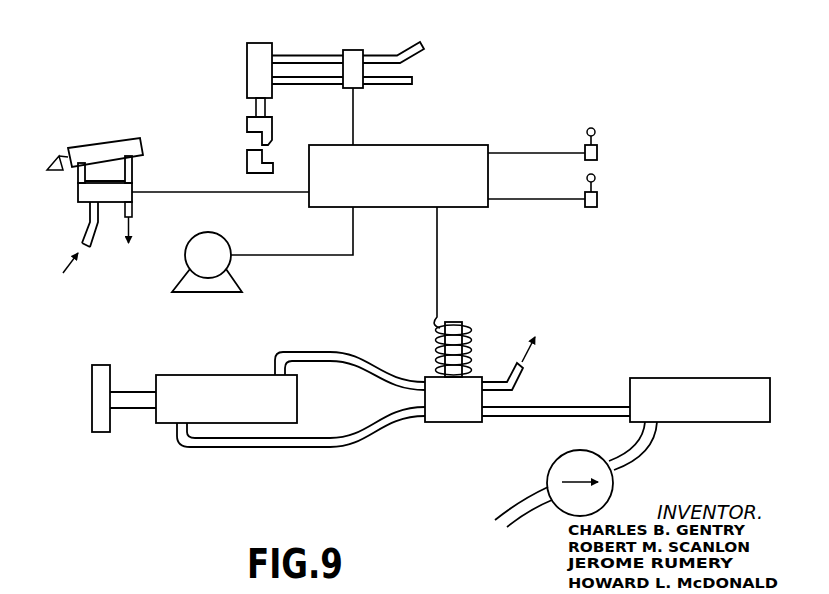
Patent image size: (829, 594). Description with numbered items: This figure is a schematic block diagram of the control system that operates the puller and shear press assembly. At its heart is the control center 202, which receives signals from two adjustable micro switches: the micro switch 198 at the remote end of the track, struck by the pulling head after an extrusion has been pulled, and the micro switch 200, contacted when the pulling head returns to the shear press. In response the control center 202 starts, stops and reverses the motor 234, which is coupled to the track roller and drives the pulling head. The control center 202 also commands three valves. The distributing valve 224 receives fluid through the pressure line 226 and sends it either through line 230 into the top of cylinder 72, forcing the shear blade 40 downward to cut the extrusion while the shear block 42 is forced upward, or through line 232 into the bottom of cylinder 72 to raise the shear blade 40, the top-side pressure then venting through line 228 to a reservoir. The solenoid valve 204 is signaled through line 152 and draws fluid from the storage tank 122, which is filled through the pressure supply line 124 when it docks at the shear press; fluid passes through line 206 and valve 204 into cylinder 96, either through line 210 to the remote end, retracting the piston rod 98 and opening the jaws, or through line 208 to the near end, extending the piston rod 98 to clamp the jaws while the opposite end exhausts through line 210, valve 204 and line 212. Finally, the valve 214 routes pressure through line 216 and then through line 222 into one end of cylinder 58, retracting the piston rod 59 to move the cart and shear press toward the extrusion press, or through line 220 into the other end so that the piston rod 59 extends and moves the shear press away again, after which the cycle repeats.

The shear blade 40 is at (253, 126).
The shear block 42 is at (252, 163).
The cylinder 58 is at (103, 147).
The piston rod 59 is at (62, 155).
The cylinder 72 is at (252, 62).
The cylinder 96 is at (198, 392).
The piston rod 98 is at (138, 400).
The storage tank 122 is at (710, 386).
The pressure supply line 124 is at (642, 448).
The line 152 is at (438, 277).
The micro switch 198 is at (598, 199).
The micro switch 200 is at (598, 148).
The control center 202 is at (453, 148).
The solenoid valve 204 is at (448, 419).
The line 206 is at (533, 415).
The line 208 is at (323, 354).
The line 210 is at (323, 447).
The line 212 is at (524, 368).
The valve 214 is at (82, 197).
The line 216 is at (80, 240).
The line 220 is at (78, 176).
The line 222 is at (132, 172).
The distributing valve 224 is at (360, 52).
The pressure line 226 is at (415, 56).
The line 228 is at (398, 85).
The line 230 is at (310, 55).
The line 232 is at (318, 84).
The motor 234 is at (187, 260).